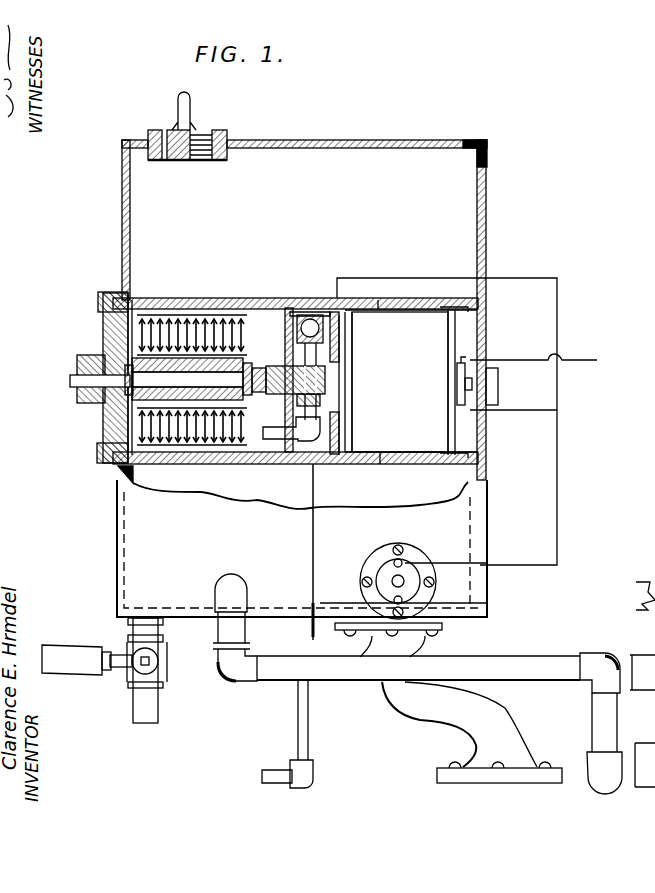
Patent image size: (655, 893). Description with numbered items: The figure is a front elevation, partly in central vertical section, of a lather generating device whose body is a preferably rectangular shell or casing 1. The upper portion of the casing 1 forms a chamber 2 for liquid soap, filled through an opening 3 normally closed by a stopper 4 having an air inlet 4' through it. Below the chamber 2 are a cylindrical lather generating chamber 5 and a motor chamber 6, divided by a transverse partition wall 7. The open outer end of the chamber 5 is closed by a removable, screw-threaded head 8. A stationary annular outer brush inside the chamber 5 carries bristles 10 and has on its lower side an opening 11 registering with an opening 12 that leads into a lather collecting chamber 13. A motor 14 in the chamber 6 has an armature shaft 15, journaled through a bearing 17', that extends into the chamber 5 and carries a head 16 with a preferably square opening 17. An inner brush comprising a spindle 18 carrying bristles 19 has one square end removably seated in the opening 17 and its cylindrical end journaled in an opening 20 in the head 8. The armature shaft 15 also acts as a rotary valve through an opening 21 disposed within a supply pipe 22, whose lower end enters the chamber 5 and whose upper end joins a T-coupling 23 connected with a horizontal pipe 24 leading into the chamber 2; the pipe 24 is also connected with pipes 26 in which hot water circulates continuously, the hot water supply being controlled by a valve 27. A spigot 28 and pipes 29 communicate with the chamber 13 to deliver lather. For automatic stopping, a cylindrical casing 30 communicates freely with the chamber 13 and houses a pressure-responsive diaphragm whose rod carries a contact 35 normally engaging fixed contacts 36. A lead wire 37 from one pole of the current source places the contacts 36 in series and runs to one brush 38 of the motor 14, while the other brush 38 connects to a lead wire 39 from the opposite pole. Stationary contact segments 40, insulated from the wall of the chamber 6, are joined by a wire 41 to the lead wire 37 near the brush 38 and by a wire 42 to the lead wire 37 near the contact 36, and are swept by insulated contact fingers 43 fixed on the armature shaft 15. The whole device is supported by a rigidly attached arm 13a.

The shell or casing 1 is at (490, 218).
The chamber 2 is at (266, 330).
The opening 3 is at (215, 160).
The stopper 4 is at (192, 317).
The air inlet 4' is at (134, 132).
The lather generating chamber 5 is at (272, 300).
The motor chamber 6 is at (466, 336).
The transverse partition wall 7 is at (157, 299).
The removable head 8 is at (98, 420).
The bristles 10 is at (100, 331).
The opening 11 is at (172, 466).
The opening 12 is at (122, 480).
The lather collecting chamber 13 is at (381, 473).
The arm 13a is at (430, 718).
The motor 14 is at (400, 382).
The armature shaft 15 is at (340, 392).
The head 16 is at (256, 464).
The opening 17 is at (304, 311).
The bearing 17' is at (271, 471).
The spindle 18 is at (195, 379).
The bristles 19 is at (108, 346).
The opening 20 is at (80, 380).
The opening 21 is at (338, 365).
The supply pipe 22 is at (335, 430).
The T-coupling 23 is at (333, 310).
The horizontal pipe 24 is at (640, 561).
The pipes 26 is at (310, 732).
The valve 27 is at (638, 379).
The spigot 28 is at (104, 670).
The pipes 29 is at (240, 672).
The cylindrical casing 30 is at (465, 603).
The contact 35 is at (392, 588).
The fixed contacts 36 is at (394, 562).
The lead wire 37 is at (553, 522).
The brush 38 is at (466, 357).
The lead wire 39 is at (586, 362).
The stationary contact segments 40 is at (382, 302).
The wire 41 is at (524, 275).
The wire 42 is at (300, 515).
The contact fingers 43 is at (340, 330).